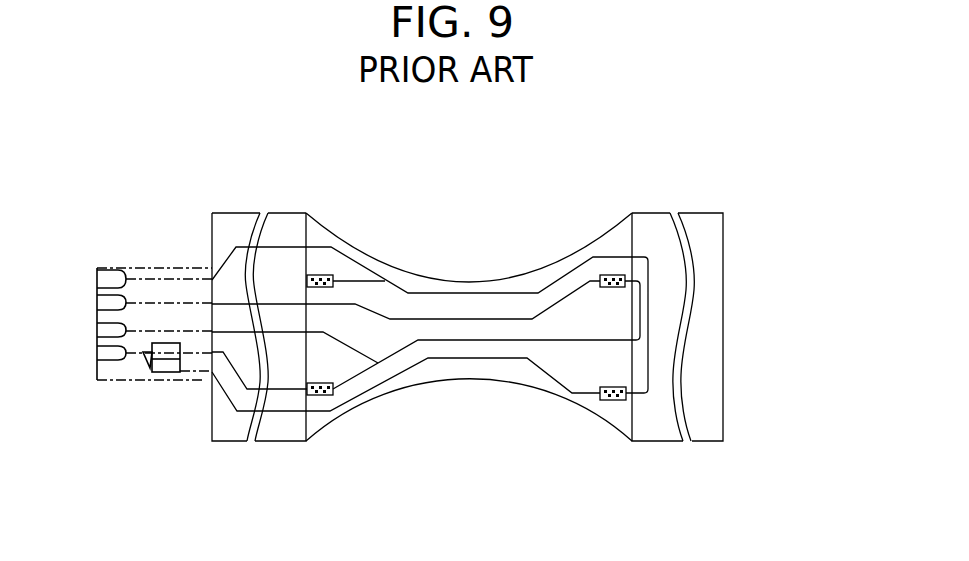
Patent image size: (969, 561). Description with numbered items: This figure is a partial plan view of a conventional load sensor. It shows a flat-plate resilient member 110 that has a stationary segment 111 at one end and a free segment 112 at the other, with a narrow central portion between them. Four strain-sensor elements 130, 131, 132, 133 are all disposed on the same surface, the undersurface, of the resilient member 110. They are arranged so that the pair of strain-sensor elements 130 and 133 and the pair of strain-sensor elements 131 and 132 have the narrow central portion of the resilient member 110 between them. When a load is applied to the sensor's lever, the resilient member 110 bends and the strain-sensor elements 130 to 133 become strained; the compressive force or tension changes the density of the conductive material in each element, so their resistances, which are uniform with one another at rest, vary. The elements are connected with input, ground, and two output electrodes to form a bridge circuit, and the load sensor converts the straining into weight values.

The flat-plate resilient member 110 is at (457, 276).
The stationary segment 111 is at (233, 223).
The free segment 112 is at (707, 243).
The strain-sensor element 130 is at (316, 396).
The strain-sensor element 131 is at (616, 274).
The strain-sensor element 132 is at (612, 401).
The strain-sensor element 133 is at (321, 274).